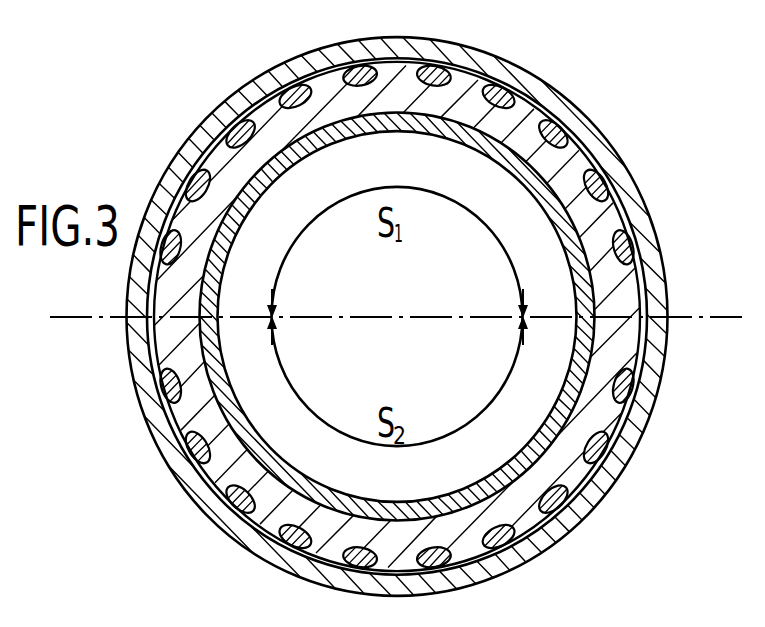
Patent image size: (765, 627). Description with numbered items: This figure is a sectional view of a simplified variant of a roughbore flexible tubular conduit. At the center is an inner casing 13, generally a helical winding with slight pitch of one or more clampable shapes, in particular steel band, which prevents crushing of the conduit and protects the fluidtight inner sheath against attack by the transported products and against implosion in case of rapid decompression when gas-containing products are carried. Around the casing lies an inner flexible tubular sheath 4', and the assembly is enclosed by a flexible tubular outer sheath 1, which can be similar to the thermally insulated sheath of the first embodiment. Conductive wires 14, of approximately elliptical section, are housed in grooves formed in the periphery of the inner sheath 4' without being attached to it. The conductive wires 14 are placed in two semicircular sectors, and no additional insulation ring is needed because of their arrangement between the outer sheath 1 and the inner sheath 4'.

The flexible tubular outer sheath 1 is at (637, 432).
The inner flexible tubular sheath 4' is at (437, 316).
The inner casing 13 is at (575, 392).
The conductive wires 14 is at (593, 180).